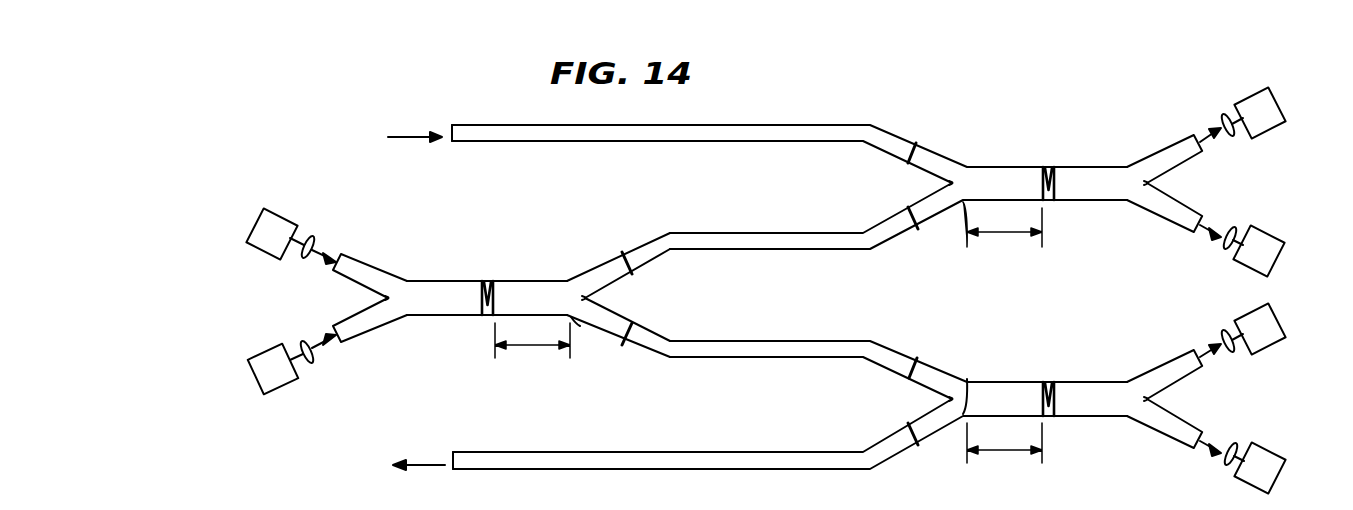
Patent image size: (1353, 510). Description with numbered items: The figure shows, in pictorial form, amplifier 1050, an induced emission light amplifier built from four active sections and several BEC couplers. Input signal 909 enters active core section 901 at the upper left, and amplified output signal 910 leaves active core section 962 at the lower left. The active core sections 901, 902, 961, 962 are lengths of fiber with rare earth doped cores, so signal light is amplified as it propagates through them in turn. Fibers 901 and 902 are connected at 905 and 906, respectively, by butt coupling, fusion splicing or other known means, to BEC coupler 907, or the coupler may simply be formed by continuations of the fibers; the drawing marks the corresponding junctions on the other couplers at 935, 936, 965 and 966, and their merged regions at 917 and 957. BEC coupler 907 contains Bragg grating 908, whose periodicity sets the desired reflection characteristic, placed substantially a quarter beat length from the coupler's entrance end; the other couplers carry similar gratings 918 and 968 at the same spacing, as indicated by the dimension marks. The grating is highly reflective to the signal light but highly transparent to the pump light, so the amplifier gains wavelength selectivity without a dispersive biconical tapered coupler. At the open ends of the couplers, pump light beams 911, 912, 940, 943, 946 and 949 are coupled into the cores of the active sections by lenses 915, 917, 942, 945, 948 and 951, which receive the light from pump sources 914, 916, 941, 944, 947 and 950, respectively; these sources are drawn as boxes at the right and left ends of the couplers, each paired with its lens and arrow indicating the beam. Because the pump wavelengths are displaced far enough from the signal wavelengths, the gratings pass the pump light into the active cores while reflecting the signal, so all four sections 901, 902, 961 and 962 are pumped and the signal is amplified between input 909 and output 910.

The amplifier 1050 is at (1072, 78).
The active core section 901 is at (790, 124).
The active core section 902 is at (790, 232).
The connection 905 is at (912, 150).
The connection 906 is at (908, 218).
The BEC coupler 907 is at (961, 208).
The Bragg grating 908 is at (1048, 167).
The input signal light 909 is at (415, 124).
The amplified output signal 910 is at (419, 451).
The pump light beam 911 is at (1213, 127).
The pump light beam 912 is at (1208, 240).
The pump source 914 is at (1253, 92).
The lens 915 is at (1235, 140).
The pump source 916 is at (1283, 240).
The lens 917 is at (1235, 226).
The quarter-wave shifted grating 918 is at (1048, 382).
The waveguide branch 935 is at (912, 366).
The waveguide branch 936 is at (908, 435).
The pump light beam 940 is at (1215, 344).
The pump source 941 is at (1281, 312).
The lens 942 is at (1235, 357).
The pump light beam 943 is at (1210, 457).
The pump source 944 is at (1283, 455).
The lens 945 is at (1237, 442).
The pump light beam 946 is at (317, 247).
The pump source 947 is at (280, 212).
The lens 948 is at (300, 258).
The pump light beam 949 is at (313, 363).
The pump source 950 is at (252, 362).
The lens 951 is at (300, 344).
The coupling region 957 is at (578, 322).
The active core section 961 is at (790, 340).
The active core section 962 is at (790, 451).
The waveguide branch 965 is at (627, 262).
The waveguide branch 966 is at (627, 333).
The quarter-wave shifted grating 968 is at (487, 281).